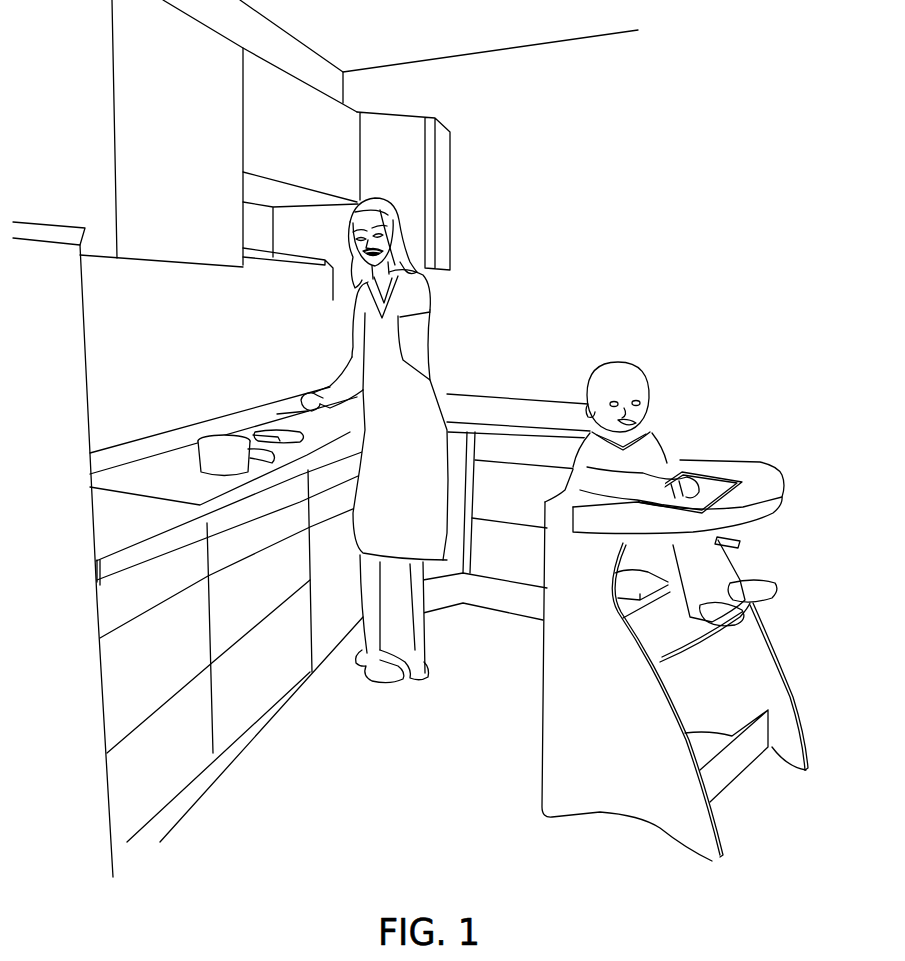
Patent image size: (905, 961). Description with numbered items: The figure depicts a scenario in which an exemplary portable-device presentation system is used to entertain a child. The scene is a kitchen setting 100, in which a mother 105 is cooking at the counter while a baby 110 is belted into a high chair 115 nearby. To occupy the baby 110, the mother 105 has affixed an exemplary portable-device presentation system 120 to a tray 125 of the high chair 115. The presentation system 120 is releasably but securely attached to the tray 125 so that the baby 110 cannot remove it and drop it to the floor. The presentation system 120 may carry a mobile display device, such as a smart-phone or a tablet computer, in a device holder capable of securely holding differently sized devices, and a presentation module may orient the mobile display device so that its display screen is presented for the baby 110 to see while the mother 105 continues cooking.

The kitchen setting 100 is at (683, 112).
The mother 105 is at (435, 295).
The baby 110 is at (652, 435).
The high chair 115 is at (543, 655).
The portable-device presentation system 120 is at (723, 477).
The tray 125 is at (772, 470).